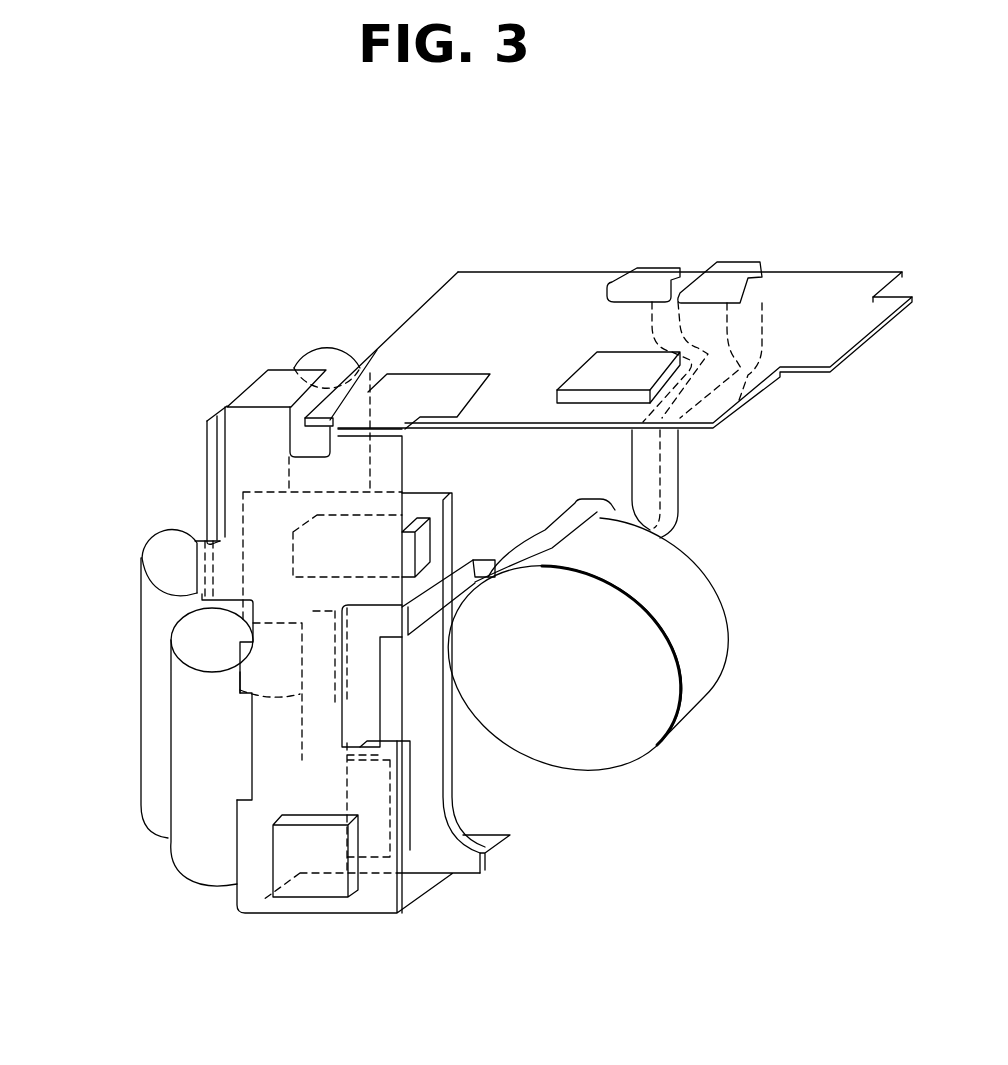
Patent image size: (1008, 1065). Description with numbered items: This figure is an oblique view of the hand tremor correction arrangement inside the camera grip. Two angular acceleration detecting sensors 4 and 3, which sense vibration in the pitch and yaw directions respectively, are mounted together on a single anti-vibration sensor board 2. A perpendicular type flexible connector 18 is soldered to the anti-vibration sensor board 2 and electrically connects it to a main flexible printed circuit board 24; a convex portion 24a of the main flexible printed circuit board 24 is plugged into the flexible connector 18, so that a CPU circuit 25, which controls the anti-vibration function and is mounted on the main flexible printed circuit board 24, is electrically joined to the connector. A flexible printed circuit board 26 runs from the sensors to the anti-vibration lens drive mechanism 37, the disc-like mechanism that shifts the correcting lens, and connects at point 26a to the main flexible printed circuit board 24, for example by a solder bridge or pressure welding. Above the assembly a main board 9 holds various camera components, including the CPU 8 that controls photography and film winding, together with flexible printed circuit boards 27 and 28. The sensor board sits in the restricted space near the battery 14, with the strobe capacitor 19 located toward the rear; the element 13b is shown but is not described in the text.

The anti-vibration sensor board 2 is at (453, 799).
The angular acceleration detecting sensor 3 is at (405, 835).
The angular acceleration detecting sensor 4 is at (427, 538).
The CPU 8 is at (600, 363).
The main board 9 is at (852, 285).
The shaft 13b is at (163, 537).
The battery 14 is at (185, 768).
The flexible connector 18 is at (297, 737).
The strobe capacitor 19 is at (324, 360).
The main flexible printed circuit board 24 is at (265, 380).
The convex portion 24a is at (245, 665).
The CPU circuit 25 is at (328, 890).
The flexible printed circuit board 26 is at (573, 517).
The connection point 26a is at (363, 697).
The flexible printed circuit board 27 is at (637, 268).
The flexible printed circuit board 28 is at (743, 262).
The anti-vibration lens drive mechanism 37 is at (693, 677).